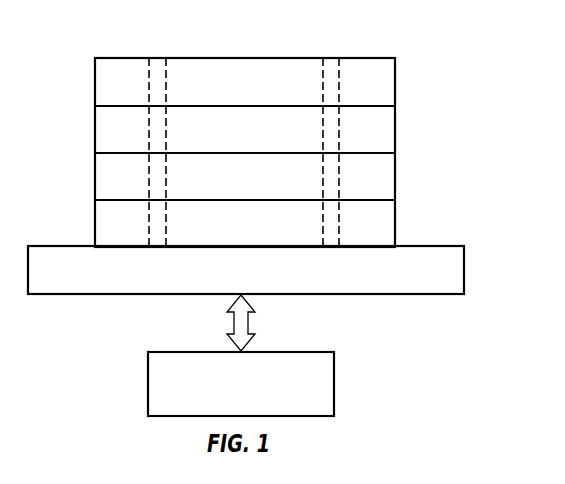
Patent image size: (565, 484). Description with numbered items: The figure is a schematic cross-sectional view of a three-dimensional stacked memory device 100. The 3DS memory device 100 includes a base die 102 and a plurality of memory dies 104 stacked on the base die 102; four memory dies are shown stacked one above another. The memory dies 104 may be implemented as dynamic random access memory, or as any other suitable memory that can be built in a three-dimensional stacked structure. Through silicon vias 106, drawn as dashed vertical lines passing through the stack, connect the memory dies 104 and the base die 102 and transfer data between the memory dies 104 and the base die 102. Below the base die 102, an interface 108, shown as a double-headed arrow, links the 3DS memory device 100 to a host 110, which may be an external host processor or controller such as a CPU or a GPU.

The 3DS memory device 100 is at (489, 82).
The base die 102 is at (464, 268).
The memory dies 104 is at (396, 58).
The through silicon vias (TSVs) 106 is at (157, 67).
The interface 108 is at (250, 323).
The host 110 is at (334, 387).